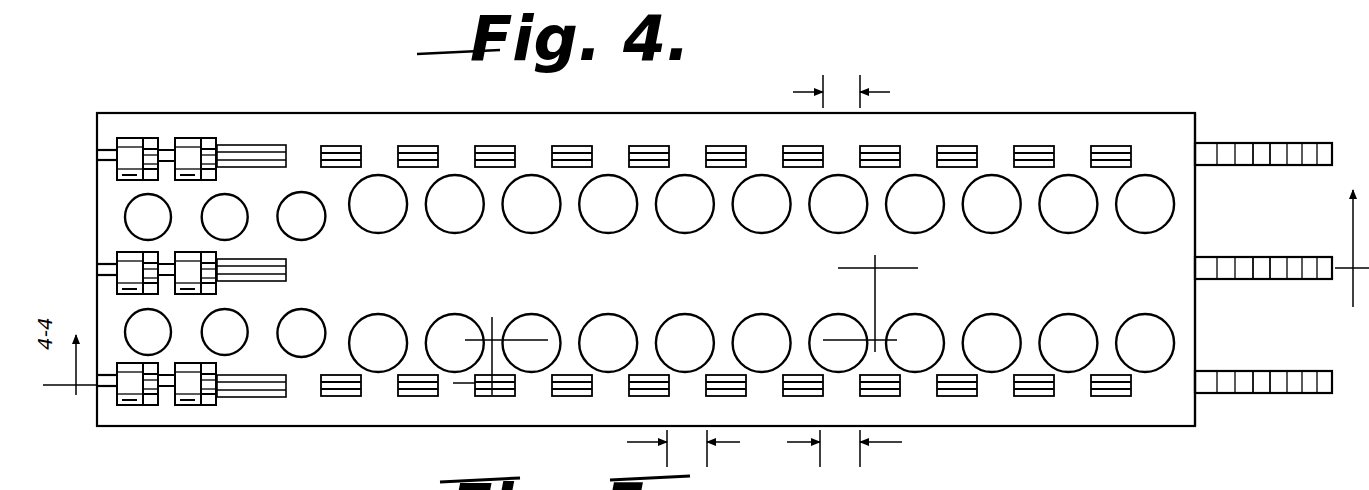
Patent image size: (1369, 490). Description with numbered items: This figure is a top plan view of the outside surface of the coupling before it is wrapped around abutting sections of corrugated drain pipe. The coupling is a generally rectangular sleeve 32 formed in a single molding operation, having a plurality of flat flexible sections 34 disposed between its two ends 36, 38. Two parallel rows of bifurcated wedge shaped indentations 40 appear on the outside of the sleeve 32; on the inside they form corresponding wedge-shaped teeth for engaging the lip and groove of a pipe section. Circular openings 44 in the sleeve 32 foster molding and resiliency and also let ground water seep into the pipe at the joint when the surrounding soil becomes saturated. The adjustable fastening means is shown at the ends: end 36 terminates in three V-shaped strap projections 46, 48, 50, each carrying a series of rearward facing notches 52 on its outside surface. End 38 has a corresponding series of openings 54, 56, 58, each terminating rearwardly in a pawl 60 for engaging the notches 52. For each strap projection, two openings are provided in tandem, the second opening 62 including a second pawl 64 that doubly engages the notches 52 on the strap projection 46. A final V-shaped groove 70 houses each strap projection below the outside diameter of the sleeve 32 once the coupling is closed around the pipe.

The sleeve 32 is at (674, 283).
The flat flexible sections 34 is at (764, 271).
The end 36 is at (1210, 107).
The end 38 is at (97, 119).
The bifurcated wedge shaped indentations 40 is at (576, 146).
The circular openings 44 is at (686, 175).
The V-shaped strap projection 46 is at (1325, 394).
The V-shaped strap projection 48 is at (1314, 281).
The V-shaped strap projection 50 is at (1327, 167).
The rearward facing notches 52 is at (1257, 143).
The opening 54 is at (118, 387).
The opening 56 is at (120, 273).
The opening 58 is at (118, 158).
The pawls 60 is at (148, 140).
The second opening 62 is at (200, 403).
The second pawl 64 is at (216, 400).
The V-shaped groove 70 is at (249, 158).